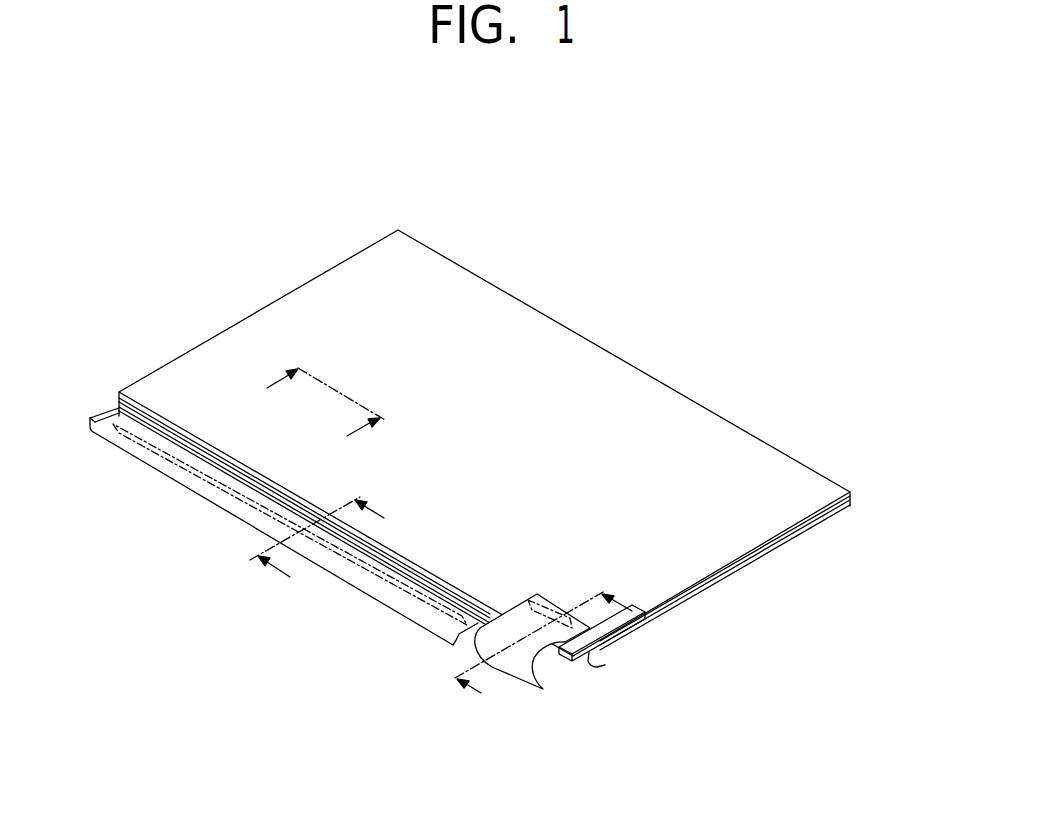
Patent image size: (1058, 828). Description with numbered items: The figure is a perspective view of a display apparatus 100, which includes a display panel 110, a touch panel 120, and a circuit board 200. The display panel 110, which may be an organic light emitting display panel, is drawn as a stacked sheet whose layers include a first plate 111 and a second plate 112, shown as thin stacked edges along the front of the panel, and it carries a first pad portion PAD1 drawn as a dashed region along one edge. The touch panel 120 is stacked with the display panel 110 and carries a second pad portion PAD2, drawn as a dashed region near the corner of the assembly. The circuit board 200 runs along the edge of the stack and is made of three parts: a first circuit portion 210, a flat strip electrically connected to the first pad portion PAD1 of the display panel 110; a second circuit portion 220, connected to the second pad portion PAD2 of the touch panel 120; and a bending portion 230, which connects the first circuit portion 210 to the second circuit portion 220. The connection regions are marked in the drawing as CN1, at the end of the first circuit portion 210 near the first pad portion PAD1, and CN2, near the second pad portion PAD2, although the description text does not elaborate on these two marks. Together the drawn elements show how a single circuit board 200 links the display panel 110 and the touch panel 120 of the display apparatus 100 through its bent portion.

The display apparatus 100 is at (511, 443).
The display panel 110 is at (511, 521).
The first plate 111 is at (794, 538).
The second plate 112 is at (484, 523).
The touch panel 120 is at (698, 592).
The circuit board 200 is at (401, 579).
The first circuit portion 210 is at (274, 558).
The second circuit portion 220 is at (593, 672).
The bending portion 230 is at (626, 686).
The first connector CN1 is at (119, 403).
The second connector CN2 is at (606, 652).
The first pad portion PAD1 is at (188, 467).
The second pad portion PAD2 is at (593, 612).